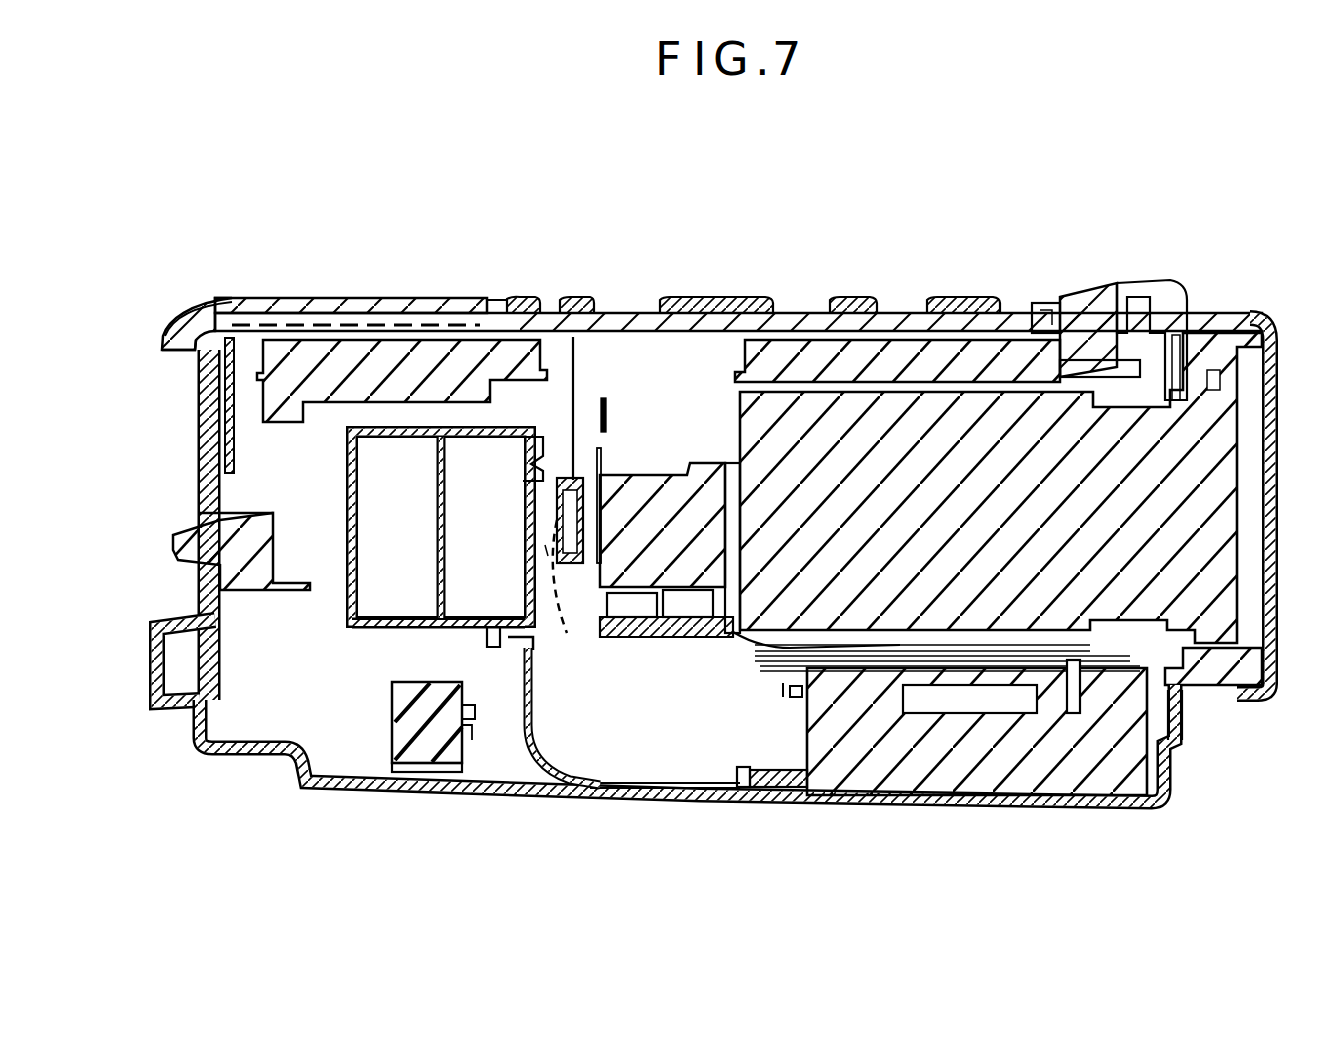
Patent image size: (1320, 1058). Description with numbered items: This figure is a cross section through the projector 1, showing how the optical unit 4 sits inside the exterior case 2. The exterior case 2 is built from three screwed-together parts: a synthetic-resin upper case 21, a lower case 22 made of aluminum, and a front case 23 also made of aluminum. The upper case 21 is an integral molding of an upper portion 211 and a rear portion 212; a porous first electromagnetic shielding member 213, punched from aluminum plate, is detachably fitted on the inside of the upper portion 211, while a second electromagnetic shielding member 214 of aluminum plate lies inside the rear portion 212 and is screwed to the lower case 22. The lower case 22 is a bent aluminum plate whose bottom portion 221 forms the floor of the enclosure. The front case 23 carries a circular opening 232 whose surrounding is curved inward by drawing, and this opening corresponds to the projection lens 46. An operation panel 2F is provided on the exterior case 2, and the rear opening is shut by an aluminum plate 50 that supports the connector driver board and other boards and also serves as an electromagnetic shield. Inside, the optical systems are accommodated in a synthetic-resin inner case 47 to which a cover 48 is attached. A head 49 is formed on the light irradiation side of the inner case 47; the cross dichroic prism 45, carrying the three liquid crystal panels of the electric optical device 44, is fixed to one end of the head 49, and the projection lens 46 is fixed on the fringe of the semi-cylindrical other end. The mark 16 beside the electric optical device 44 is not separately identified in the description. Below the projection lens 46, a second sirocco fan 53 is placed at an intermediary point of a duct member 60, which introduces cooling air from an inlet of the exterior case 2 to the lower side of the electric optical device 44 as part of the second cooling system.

The projector 1 is at (954, 252).
The exterior case 2 is at (452, 298).
The operation panel 2F is at (752, 299).
The optical unit 4 is at (688, 370).
The upper case 21 is at (345, 320).
The upper portion 211 is at (256, 310).
The rear portion 212 is at (198, 398).
The first electromagnetic shielding member 213 is at (495, 312).
The second electromagnetic shielding member 214 is at (198, 375).
The lower case 22 is at (727, 806).
The bottom portion 221 is at (624, 806).
The front case 23 is at (1176, 760).
The circular opening 232 is at (1185, 330).
The electric optical device 44 is at (560, 572).
The valve seat 16 is at (571, 606).
The cross dichroic prism 45 is at (652, 492).
The projection lens 46 is at (1207, 403).
The inner case 47 is at (346, 620).
The cover 48 is at (345, 455).
The head 49 is at (722, 636).
The aluminum plate 50 is at (224, 452).
The second sirocco fan 53 is at (974, 806).
The duct member 60 is at (523, 735).